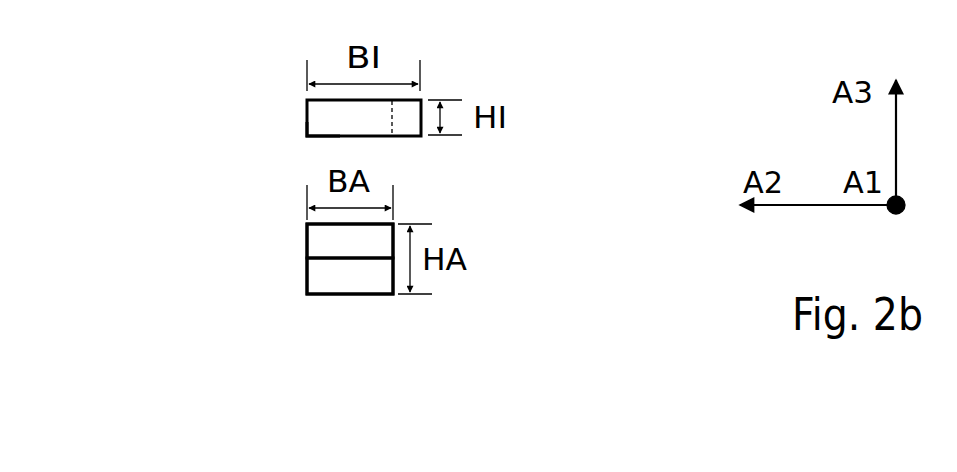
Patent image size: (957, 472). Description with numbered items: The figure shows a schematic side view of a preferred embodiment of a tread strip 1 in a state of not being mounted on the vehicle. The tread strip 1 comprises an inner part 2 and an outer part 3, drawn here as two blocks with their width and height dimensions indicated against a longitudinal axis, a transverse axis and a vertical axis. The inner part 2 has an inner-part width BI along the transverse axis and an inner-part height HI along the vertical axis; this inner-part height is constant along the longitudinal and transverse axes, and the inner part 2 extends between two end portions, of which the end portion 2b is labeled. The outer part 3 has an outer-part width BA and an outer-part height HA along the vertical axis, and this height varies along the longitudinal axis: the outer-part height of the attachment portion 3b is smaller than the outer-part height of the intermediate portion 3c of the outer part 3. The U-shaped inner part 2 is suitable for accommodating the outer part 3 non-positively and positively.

The tread strip 1 is at (562, 132).
The inner part 2 is at (287, 88).
The end portion 2b is at (323, 127).
The outer part 3 is at (282, 208).
The attachment portion 3b is at (320, 280).
The intermediate portion 3c is at (327, 243).